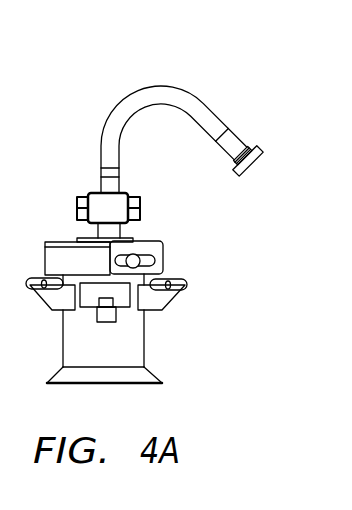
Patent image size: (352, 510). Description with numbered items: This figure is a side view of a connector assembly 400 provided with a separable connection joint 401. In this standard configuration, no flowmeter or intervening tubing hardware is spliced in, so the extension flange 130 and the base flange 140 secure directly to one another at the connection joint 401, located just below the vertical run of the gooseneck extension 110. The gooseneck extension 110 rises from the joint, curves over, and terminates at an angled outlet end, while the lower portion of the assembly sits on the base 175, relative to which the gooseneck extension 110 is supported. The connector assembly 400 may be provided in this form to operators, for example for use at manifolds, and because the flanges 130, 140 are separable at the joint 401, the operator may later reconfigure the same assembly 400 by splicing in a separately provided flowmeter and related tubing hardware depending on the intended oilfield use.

The gooseneck extension 110 is at (161, 93).
The connector assembly 400 is at (251, 106).
The connection joint 401 is at (88, 195).
The extension flange 130 is at (140, 203).
The base flange 140 is at (140, 213).
The base 175 is at (140, 378).